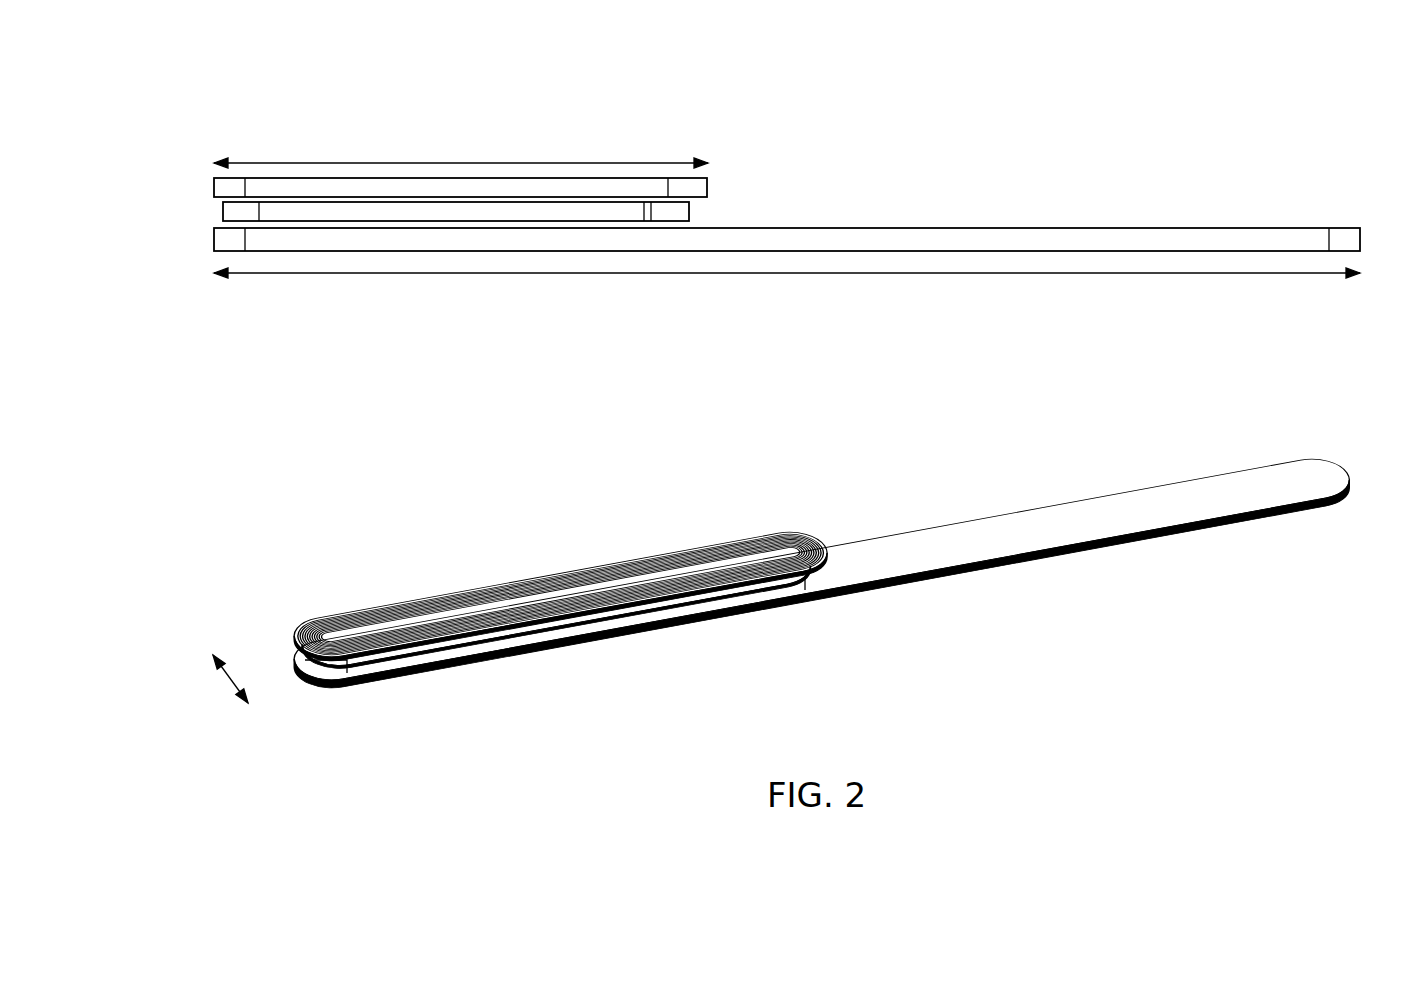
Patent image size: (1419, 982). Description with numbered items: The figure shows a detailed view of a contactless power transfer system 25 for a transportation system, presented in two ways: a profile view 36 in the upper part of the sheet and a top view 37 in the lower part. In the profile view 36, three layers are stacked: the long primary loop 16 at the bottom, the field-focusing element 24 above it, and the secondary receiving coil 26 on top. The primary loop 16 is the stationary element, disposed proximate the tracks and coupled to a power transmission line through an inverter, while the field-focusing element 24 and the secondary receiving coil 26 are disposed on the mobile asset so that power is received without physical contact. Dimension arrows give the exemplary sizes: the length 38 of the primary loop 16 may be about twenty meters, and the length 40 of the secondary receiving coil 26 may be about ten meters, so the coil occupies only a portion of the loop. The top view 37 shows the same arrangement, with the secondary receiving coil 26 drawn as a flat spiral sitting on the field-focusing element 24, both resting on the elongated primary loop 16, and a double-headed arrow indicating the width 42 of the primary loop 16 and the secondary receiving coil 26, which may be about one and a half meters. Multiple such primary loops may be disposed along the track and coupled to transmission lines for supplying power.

The primary loop 16 is at (902, 228).
The field-focusing element 24 is at (690, 206).
The contactless power transfer system 25 is at (527, 389).
The secondary receiving coil 26 is at (707, 181).
The profile view 36 is at (787, 381).
The top view 37 is at (764, 434).
The length of the primary loop 38 is at (636, 273).
The length of the secondary receiving coil 40 is at (483, 163).
The width of the primary loop and the secondary receiving coil 42 is at (228, 683).